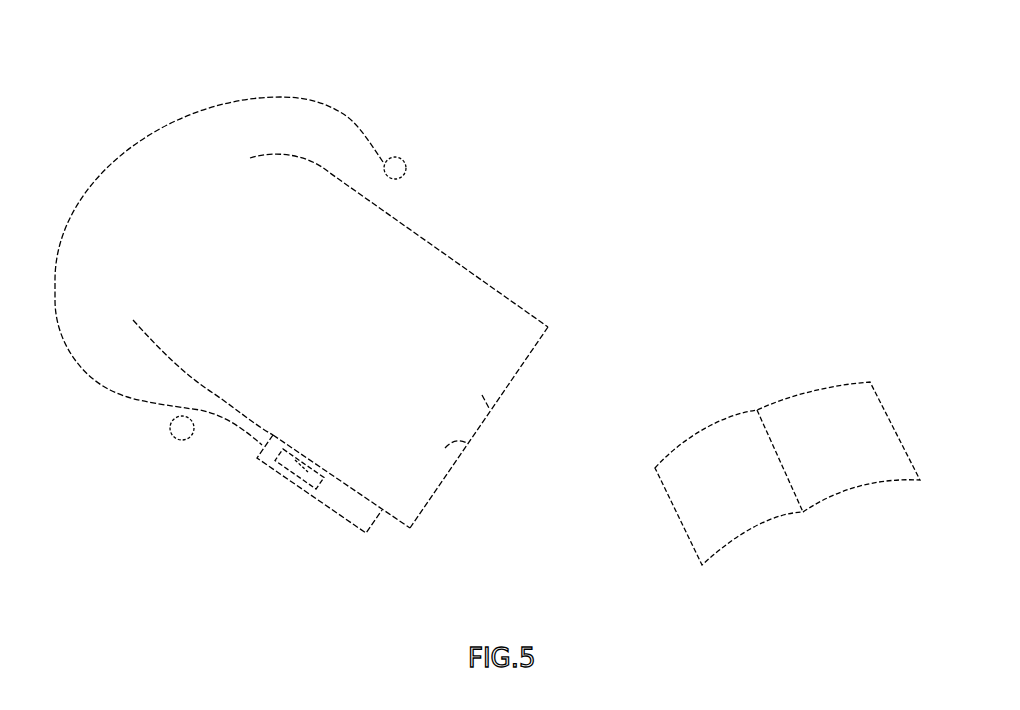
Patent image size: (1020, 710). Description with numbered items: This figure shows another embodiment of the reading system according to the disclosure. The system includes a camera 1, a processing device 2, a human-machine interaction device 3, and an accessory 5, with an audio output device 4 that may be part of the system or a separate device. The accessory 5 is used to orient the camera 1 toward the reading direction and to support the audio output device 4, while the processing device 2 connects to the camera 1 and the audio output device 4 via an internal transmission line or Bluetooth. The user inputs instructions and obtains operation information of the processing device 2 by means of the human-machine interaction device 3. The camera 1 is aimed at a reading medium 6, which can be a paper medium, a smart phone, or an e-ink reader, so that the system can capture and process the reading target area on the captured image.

The camera 1 is at (373, 520).
The processing device 2 is at (298, 480).
The human-machine interaction (HMI) device 3 is at (276, 470).
The audio output device 4 is at (406, 165).
The accessory 5 is at (305, 458).
The reading medium 6 is at (735, 494).